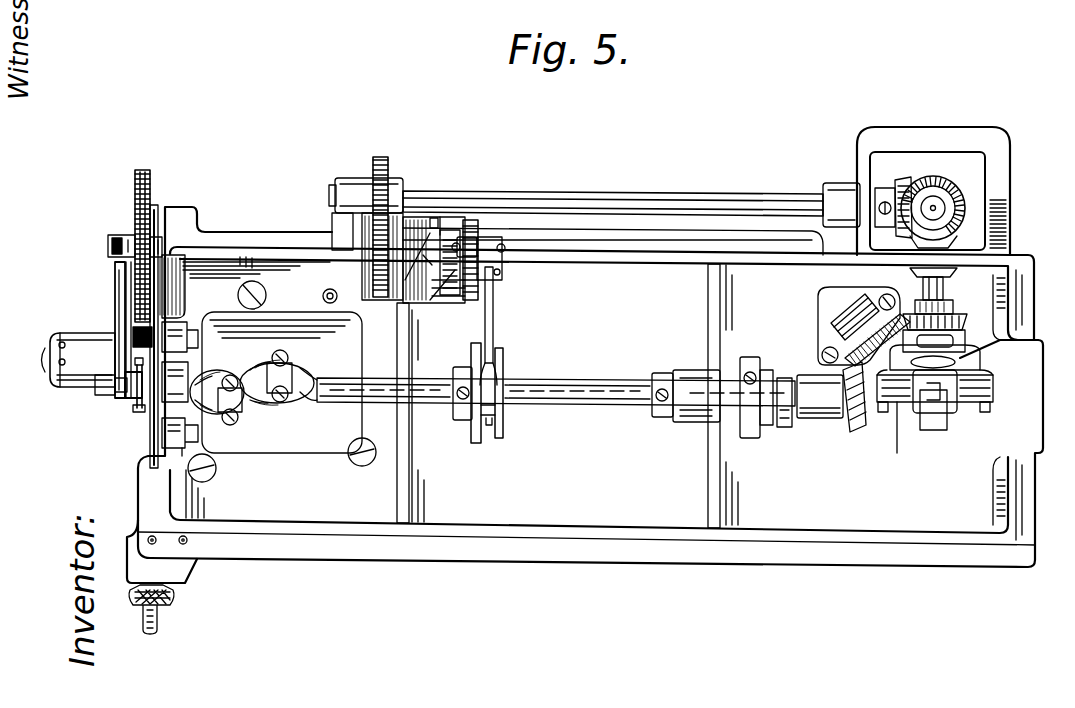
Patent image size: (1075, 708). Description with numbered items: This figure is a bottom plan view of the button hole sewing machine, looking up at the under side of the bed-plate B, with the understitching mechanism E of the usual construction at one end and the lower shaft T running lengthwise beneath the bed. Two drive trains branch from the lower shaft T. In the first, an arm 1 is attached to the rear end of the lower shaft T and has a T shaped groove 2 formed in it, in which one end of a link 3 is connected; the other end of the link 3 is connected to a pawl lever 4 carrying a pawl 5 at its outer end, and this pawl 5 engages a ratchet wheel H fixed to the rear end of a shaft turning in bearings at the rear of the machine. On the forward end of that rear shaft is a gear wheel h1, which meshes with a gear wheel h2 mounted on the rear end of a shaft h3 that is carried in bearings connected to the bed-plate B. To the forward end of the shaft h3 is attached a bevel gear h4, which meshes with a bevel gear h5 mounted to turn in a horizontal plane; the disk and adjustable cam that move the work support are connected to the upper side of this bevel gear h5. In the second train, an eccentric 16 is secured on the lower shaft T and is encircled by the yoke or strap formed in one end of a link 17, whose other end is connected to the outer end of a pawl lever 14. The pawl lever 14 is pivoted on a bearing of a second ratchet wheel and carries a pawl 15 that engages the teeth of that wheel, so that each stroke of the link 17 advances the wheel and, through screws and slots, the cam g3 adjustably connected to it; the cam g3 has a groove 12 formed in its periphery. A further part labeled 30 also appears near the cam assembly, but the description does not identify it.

The bed-plate B is at (547, 562).
The ratchet wheel H is at (135, 198).
The pawl lever 4 is at (125, 232).
The pawl 5 is at (148, 250).
The link 3 is at (116, 302).
The T shaped groove 2 is at (126, 400).
The arm 1 is at (126, 403).
The shaft h3 is at (656, 205).
The gear wheel h2 is at (383, 155).
The gear wheel h1 is at (370, 275).
The groove 12 is at (440, 293).
The cam g3 is at (445, 256).
The pin 30 is at (423, 260).
The pawl 15 is at (473, 287).
The pawl lever 14 is at (500, 270).
The link 17 is at (497, 308).
The eccentric 16 is at (508, 350).
The lower shaft T is at (573, 387).
The bevel gear h4 is at (900, 186).
The bevel gear h5 is at (950, 190).
The understitching mechanism E is at (962, 437).